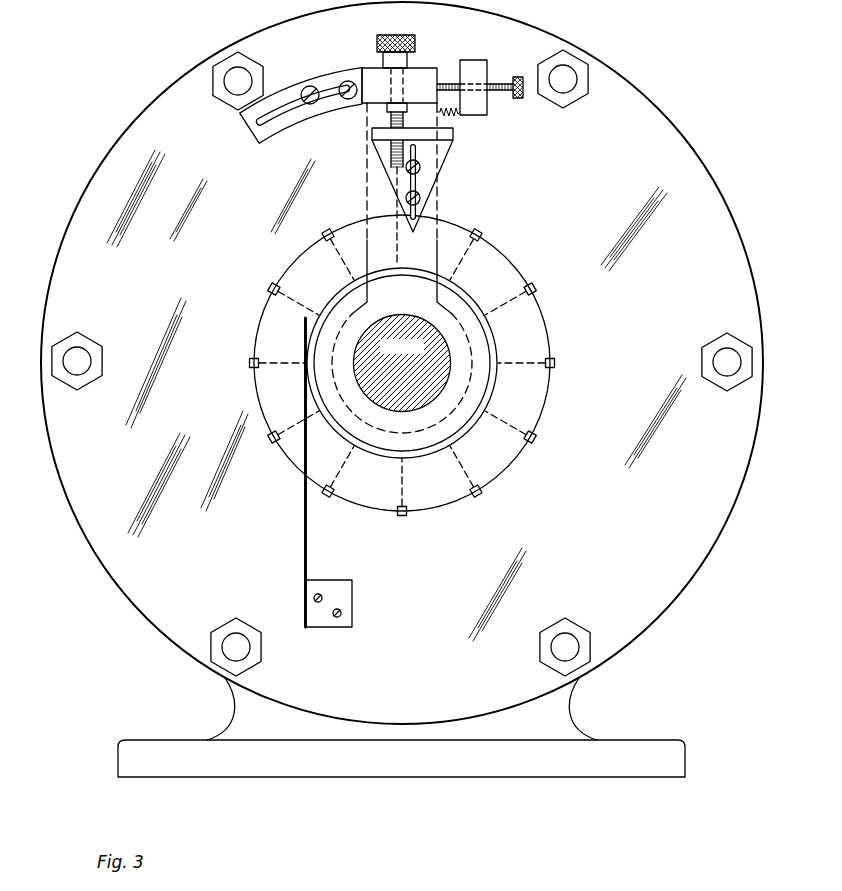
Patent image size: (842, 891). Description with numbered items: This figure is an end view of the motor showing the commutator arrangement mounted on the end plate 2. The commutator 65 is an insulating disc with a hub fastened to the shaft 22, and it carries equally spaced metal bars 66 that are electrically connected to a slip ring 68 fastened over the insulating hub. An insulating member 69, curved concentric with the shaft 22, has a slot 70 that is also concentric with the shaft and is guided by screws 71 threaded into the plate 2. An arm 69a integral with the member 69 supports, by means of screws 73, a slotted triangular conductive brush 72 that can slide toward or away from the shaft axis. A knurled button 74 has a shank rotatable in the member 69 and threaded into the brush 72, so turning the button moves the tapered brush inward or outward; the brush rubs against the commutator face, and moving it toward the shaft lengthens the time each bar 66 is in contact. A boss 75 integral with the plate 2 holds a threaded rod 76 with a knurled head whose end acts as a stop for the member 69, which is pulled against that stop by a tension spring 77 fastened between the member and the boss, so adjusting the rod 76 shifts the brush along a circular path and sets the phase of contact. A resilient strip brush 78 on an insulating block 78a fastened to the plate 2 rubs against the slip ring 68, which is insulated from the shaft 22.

The plate 2 is at (146, 108).
The shaft 22 is at (422, 347).
The commutator 65 is at (542, 322).
The bars 66 is at (274, 288).
The slip ring 68 is at (497, 358).
The member 69 is at (418, 68).
The arm 69a is at (438, 206).
The slot 70 is at (327, 85).
The screws 71 is at (343, 99).
The brush 72 is at (390, 182).
The screws 73 is at (420, 197).
The knurled button 74 is at (409, 36).
The boss 75 is at (480, 66).
The threaded rod 76 is at (499, 97).
The tension spring 77 is at (458, 116).
The brush 78 is at (303, 521).
The insulating block 78a is at (353, 599).